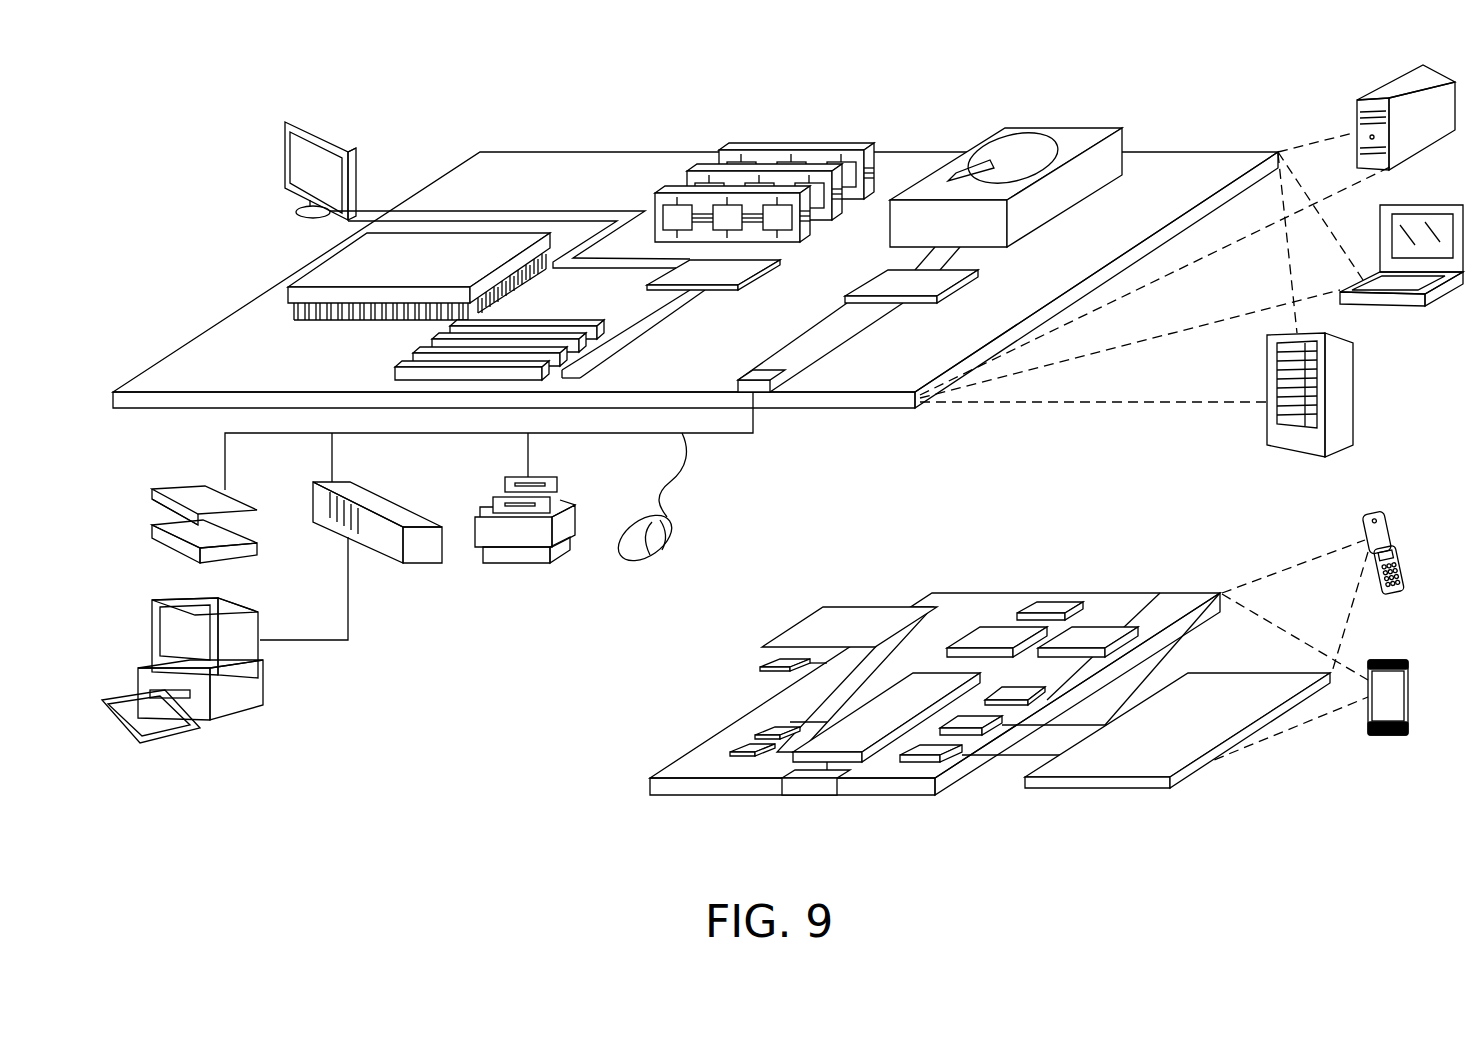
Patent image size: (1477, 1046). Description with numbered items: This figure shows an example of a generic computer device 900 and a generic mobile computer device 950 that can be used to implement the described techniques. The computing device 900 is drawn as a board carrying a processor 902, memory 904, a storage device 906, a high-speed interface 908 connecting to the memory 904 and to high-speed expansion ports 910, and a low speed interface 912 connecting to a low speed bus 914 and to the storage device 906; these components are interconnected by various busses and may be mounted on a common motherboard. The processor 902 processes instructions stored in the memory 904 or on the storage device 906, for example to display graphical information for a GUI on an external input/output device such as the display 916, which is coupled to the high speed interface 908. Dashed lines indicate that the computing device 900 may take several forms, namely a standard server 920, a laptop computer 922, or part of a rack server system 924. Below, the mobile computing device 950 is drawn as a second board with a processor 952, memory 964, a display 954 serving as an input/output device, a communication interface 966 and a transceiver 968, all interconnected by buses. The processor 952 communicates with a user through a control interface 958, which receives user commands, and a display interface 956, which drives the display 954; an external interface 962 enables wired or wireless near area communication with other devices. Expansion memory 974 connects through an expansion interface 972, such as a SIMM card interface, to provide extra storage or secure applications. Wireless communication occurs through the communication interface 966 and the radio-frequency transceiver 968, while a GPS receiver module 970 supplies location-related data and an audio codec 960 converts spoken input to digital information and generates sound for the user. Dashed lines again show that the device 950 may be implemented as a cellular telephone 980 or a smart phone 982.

The computing device 900 is at (428, 96).
The processor 902 is at (313, 267).
The memory 904 is at (800, 145).
The storage device 906 is at (1050, 123).
The high-speed interface 908 is at (727, 270).
The high-speed expansion ports 910 is at (422, 348).
The low speed interface 912 is at (882, 275).
The low speed bus 914 is at (760, 377).
The display 916 is at (290, 118).
The standard server 920 is at (1382, 97).
The laptop computer 922 is at (1440, 205).
The rack server system 924 is at (1356, 395).
The mobile computer device 950 is at (600, 806).
The processor 952 is at (853, 723).
The display 954 is at (1218, 690).
The display interface 956 is at (937, 748).
The control interface 958 is at (978, 722).
The audio codec 960 is at (1020, 692).
The external interface 962 is at (810, 780).
The memory 964 is at (755, 730).
The communication interface 966 is at (997, 630).
The transceiver 968 is at (1093, 632).
The GPS receiver module 970 is at (1050, 603).
The expansion interface 972 is at (913, 607).
The expansion memory 974 is at (823, 607).
The cellular telephone 980 is at (1380, 512).
The smart phone 982 is at (1383, 662).